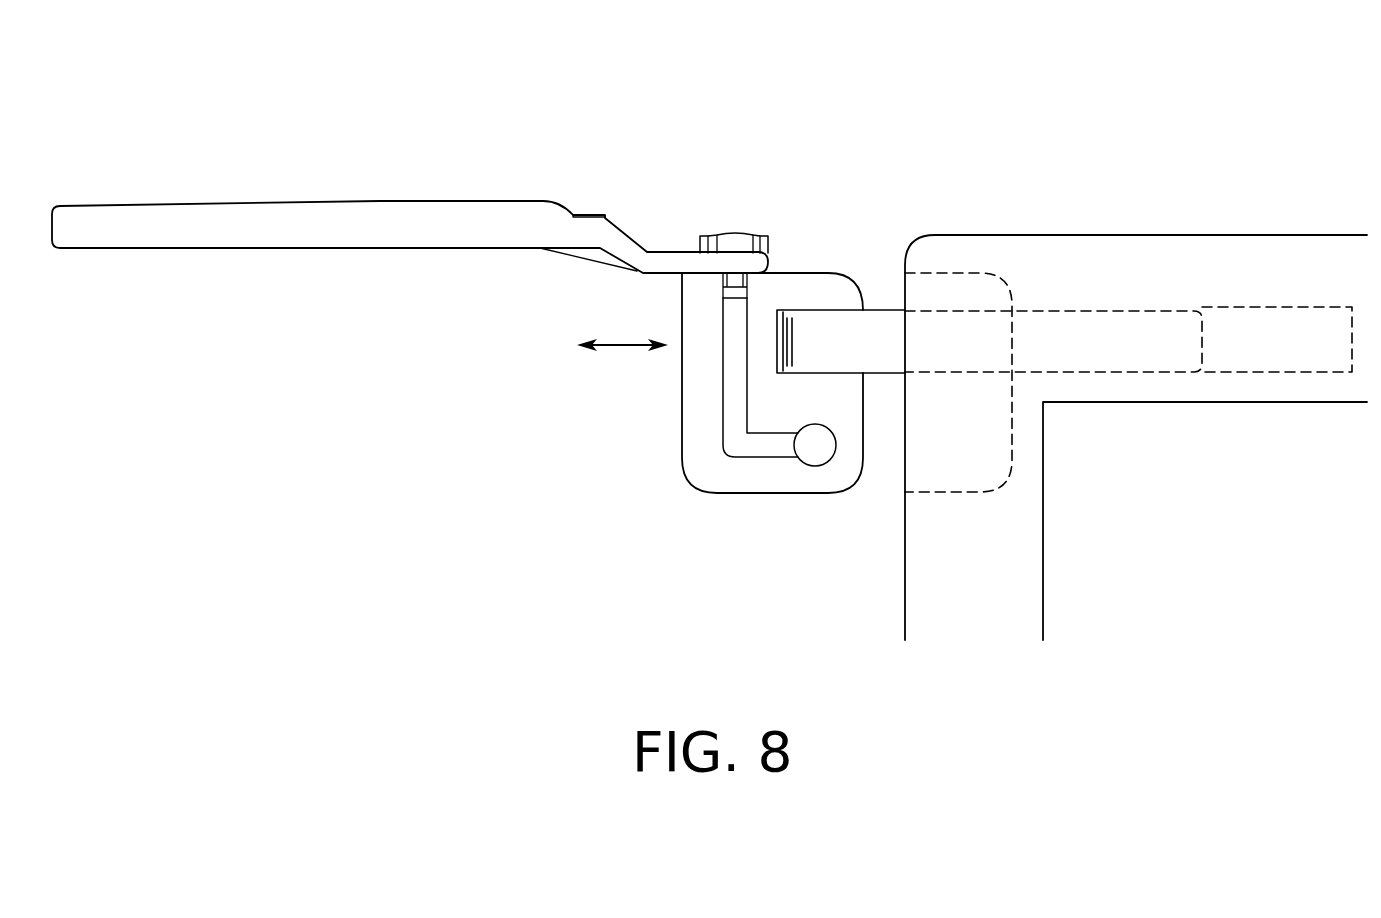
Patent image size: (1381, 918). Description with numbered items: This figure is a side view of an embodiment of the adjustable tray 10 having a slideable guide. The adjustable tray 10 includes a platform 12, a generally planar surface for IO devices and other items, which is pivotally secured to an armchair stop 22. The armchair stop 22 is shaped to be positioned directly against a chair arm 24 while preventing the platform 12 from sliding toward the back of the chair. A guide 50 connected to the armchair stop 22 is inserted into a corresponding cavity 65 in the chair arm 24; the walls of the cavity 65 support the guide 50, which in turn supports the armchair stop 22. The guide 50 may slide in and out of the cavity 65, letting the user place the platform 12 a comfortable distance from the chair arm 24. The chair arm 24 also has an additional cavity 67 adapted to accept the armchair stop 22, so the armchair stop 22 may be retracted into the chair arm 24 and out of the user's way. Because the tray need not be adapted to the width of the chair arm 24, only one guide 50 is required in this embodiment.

The adjustable tray 10 is at (818, 99).
The platform 12 is at (385, 237).
The armchair stop 22 is at (808, 285).
The chair arm 24 is at (1137, 248).
The guide 50 is at (883, 325).
The cavity 65 is at (1297, 307).
The additional cavity 67 is at (988, 280).